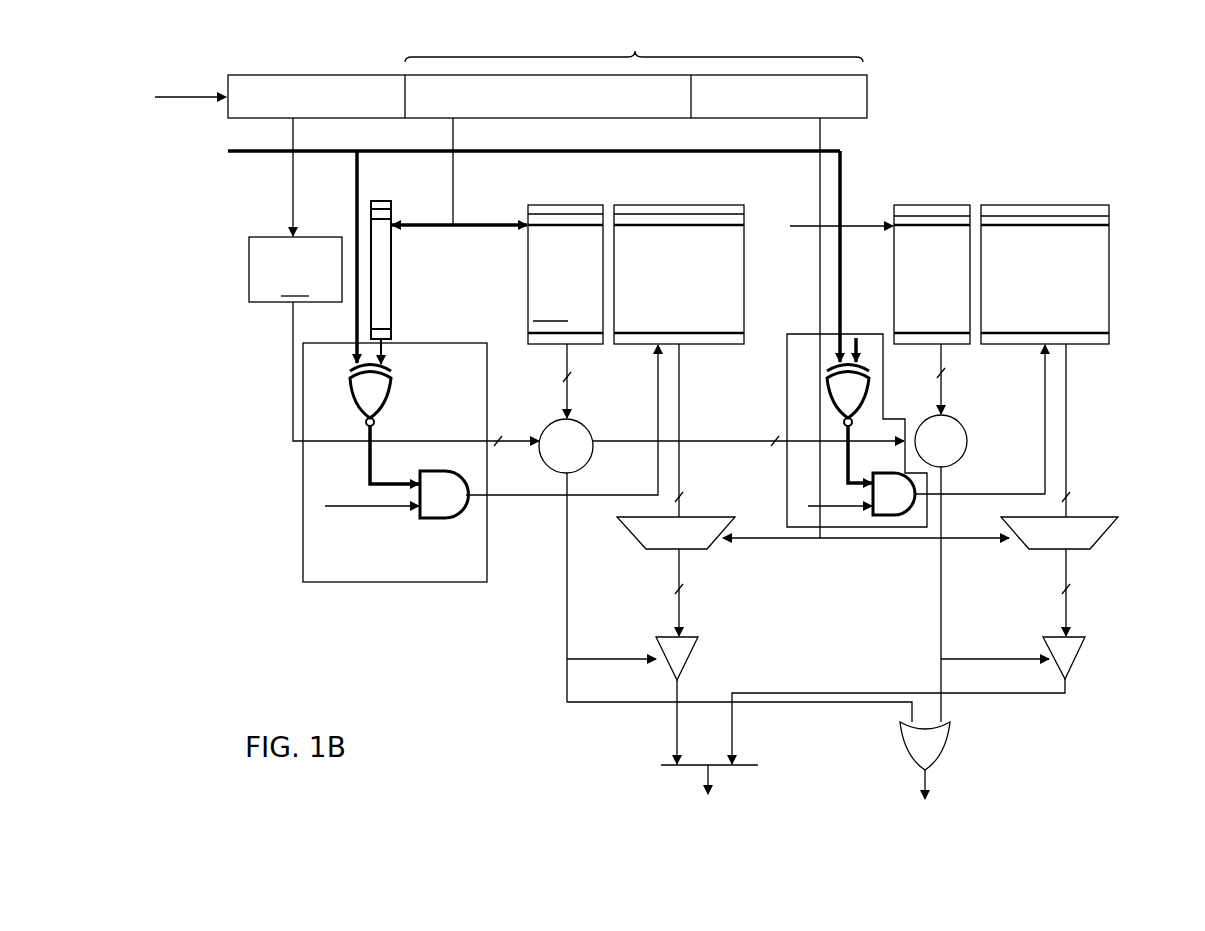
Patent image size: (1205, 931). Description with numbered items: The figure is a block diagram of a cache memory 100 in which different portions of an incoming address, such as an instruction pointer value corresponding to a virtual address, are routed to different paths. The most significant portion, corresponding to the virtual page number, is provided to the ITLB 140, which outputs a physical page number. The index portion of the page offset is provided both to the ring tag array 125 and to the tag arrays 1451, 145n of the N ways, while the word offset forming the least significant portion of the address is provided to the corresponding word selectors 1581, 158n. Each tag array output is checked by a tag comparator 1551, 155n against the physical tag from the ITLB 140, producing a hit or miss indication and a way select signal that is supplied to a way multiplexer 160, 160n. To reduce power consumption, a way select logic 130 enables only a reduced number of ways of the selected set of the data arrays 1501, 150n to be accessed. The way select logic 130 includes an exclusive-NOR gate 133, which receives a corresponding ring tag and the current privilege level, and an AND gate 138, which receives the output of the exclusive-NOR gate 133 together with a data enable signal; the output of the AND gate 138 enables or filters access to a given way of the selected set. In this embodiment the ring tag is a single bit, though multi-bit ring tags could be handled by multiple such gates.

The cache memory 100 is at (153, 86).
The ring tag array 125 is at (391, 258).
The way select logic 130 is at (413, 582).
The exclusive-NOR gate 133 is at (393, 392).
The AND gate 138 is at (431, 518).
The ITLB 140 is at (249, 270).
The tag array 1451 is at (551, 311).
The tag array 145n is at (907, 319).
The data array 1501 is at (706, 329).
The data array 150n is at (1020, 334).
The tag comparator 1551 is at (547, 429).
The tag comparator 155n is at (958, 430).
The word selector 1581 is at (645, 549).
The word selector 158n is at (1110, 530).
The way multiplexer 160 is at (690, 656).
The way multiplexer 160n is at (1078, 656).